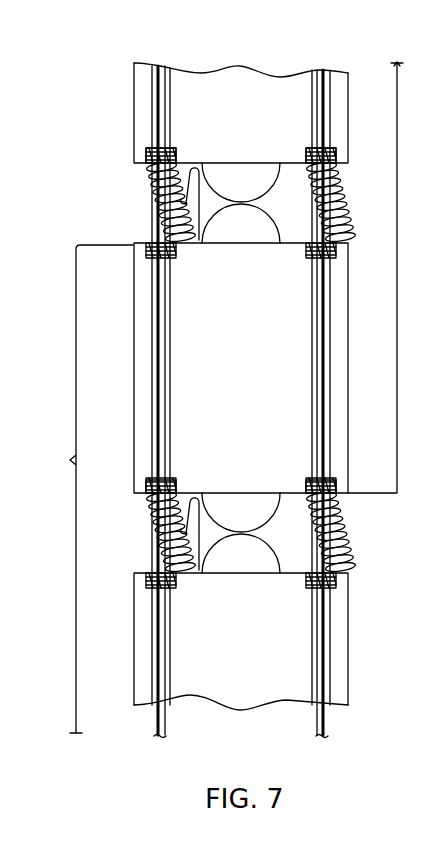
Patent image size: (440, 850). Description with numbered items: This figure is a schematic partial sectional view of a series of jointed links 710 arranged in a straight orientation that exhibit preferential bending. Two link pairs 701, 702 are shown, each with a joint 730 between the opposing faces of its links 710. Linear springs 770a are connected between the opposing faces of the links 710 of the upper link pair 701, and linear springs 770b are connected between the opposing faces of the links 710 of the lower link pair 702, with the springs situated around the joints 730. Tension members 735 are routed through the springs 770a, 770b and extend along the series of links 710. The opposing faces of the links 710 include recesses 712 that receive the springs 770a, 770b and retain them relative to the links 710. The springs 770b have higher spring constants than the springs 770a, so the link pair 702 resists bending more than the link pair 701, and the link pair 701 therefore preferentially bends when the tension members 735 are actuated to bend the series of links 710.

The link pair 701 is at (398, 276).
The link pair 702 is at (81, 489).
The link 710 is at (238, 66).
The recess 712 is at (146, 157).
The joint 730 is at (181, 199).
The tension member 735 is at (157, 100).
The linear spring 770a is at (308, 218).
The linear spring 770b is at (147, 553).